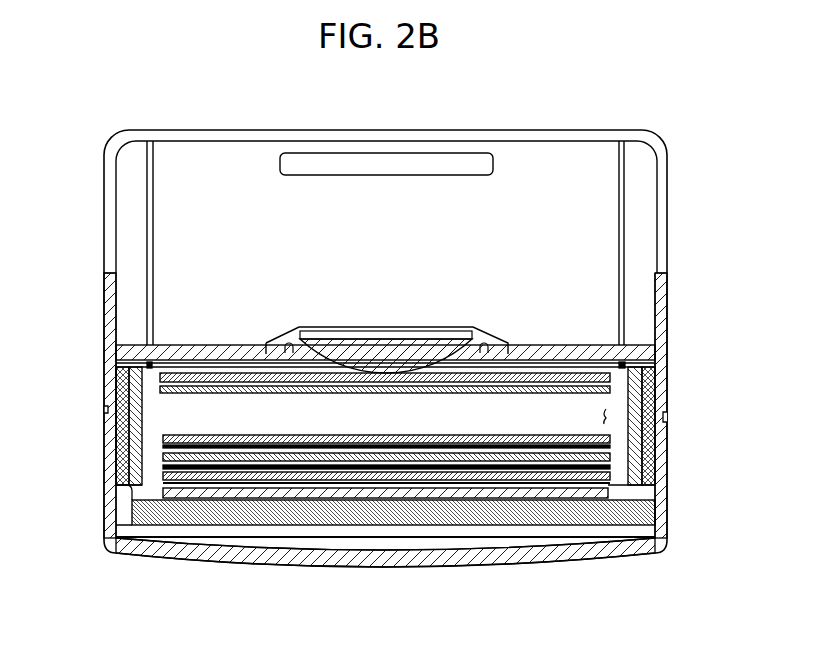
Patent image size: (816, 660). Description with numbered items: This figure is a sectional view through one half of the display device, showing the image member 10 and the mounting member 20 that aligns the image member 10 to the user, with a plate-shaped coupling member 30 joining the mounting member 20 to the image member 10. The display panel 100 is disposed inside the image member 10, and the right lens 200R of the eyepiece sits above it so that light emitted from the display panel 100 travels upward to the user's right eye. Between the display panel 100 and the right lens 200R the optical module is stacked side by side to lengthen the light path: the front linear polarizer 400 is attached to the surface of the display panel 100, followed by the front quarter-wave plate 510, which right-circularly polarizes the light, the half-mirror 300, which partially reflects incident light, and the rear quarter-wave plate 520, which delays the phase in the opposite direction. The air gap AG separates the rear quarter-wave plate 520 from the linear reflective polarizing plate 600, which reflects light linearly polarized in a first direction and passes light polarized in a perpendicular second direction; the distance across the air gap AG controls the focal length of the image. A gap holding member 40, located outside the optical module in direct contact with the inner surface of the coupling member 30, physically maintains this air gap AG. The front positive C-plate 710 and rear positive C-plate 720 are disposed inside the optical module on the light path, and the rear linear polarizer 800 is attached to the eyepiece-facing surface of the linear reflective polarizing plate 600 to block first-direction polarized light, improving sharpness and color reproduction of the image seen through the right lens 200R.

The image member 10 is at (96, 535).
The mounting member 20 is at (104, 218).
The coupling member 30 is at (106, 422).
The gap holding member 40 is at (115, 385).
The display panel 100 is at (498, 525).
The right lens 200R is at (386, 352).
The half-mirror 300 is at (610, 457).
The front linear polarizer 400 is at (547, 498).
The front quarter-wave plate 510 is at (610, 477).
The rear quarter-wave plate 520 is at (610, 440).
The linear reflective polarizing plate 600 is at (610, 378).
The front positive C-plate 710 is at (137, 472).
The rear positive C-plate 720 is at (124, 450).
The rear linear polarizer 800 is at (653, 368).
The air gap AG is at (606, 416).